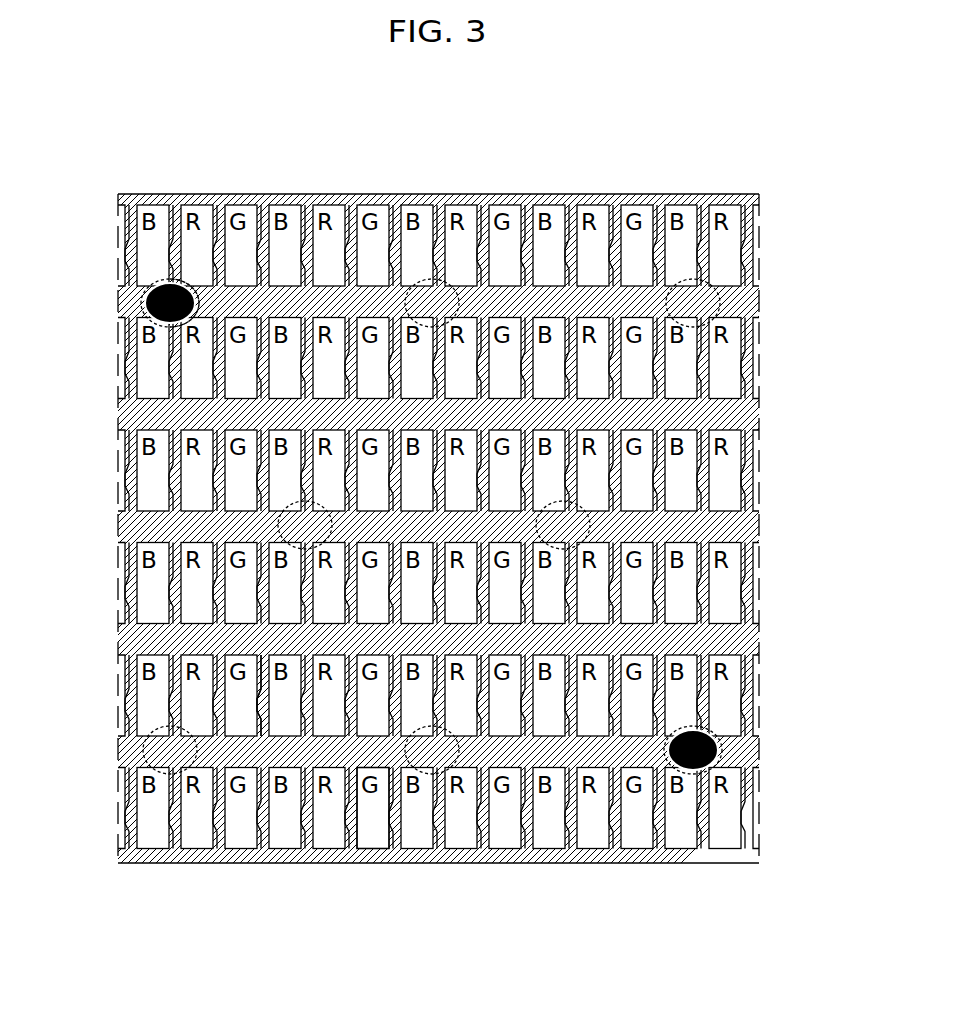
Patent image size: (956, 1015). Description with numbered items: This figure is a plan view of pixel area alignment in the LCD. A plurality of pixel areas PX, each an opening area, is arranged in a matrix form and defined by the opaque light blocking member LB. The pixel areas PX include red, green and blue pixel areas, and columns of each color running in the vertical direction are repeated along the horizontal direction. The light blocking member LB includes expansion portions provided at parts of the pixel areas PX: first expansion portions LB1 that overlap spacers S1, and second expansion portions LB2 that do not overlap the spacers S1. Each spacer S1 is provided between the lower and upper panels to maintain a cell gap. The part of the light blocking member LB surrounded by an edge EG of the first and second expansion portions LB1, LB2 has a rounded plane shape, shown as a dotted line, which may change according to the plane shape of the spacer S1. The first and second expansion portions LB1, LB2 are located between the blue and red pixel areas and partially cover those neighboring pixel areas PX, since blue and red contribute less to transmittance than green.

The pixel area PX is at (370, 842).
The light blocking member LB is at (250, 752).
The first expansion portion LB1 is at (150, 283).
The second expansion portion LB2 is at (432, 279).
The spacer S1 is at (143, 303).
The edge EG is at (198, 300).